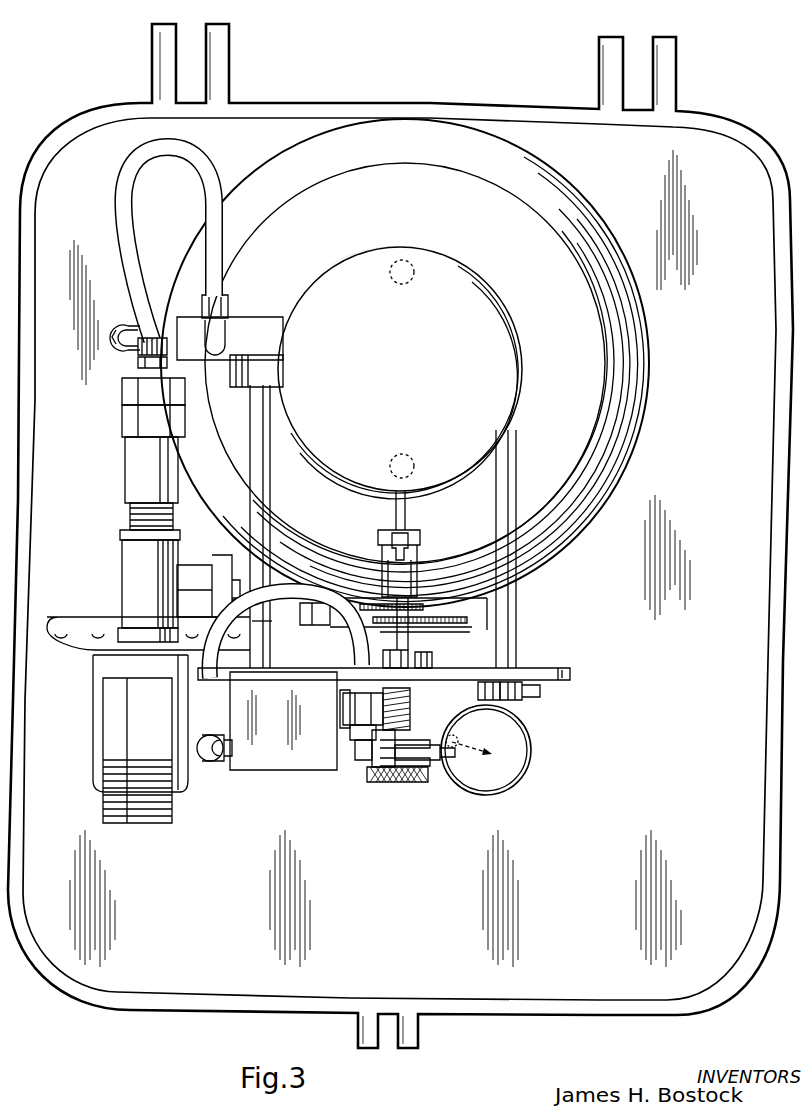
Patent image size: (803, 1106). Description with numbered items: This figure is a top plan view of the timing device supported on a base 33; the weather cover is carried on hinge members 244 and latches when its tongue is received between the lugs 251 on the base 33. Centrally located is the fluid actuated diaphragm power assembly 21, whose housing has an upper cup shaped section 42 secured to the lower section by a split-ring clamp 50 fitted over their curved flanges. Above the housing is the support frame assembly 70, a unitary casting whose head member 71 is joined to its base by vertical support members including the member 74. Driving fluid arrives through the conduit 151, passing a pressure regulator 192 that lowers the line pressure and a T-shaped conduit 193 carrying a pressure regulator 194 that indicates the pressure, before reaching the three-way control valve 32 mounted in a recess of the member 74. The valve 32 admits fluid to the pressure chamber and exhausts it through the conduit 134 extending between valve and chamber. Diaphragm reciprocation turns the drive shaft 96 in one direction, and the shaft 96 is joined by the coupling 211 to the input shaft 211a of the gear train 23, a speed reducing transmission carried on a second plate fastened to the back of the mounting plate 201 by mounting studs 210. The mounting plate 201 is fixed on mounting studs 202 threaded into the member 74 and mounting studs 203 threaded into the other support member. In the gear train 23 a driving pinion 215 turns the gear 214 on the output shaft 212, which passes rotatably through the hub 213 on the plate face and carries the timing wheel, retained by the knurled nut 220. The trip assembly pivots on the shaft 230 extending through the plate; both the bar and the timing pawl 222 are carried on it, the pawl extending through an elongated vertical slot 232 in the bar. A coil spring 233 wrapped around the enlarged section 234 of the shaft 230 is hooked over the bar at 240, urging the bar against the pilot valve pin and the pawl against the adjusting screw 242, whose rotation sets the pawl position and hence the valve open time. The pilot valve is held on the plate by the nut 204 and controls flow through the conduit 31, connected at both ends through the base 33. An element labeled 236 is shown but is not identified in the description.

The hinge members 244 is at (138, 46).
The base 33 is at (296, 102).
The fluid actuated diaphragm power assembly 21 is at (554, 170).
The upper cup shaped section 42 is at (534, 219).
The clamp 50 is at (618, 290).
The support frame assembly 70 is at (452, 242).
The head member 71 is at (362, 253).
The conduit 151 is at (118, 192).
The conduit 134 is at (131, 324).
The three-way control valve 32 is at (261, 312).
The vertical support member 74 is at (230, 384).
The mounting studs 202 is at (290, 497).
The mounting studs 203 is at (495, 508).
The drive shaft 96 is at (395, 510).
The coupling 211 is at (420, 557).
The input shaft 211a is at (378, 560).
The pressure regulator 192 is at (193, 575).
The T-shaped conduit 193 is at (130, 560).
The pressure regulator 194 is at (141, 810).
The driving pinion 215 is at (340, 580).
The gear train 23 is at (478, 620).
The gear 214 is at (470, 632).
The output shaft 212 is at (410, 640).
The mounting studs 210 is at (310, 632).
The shaft 230 is at (364, 661).
The mounting plate 201 is at (572, 675).
The nut 204 is at (289, 667).
The enlarged section 234 is at (345, 694).
The hub 213 is at (415, 702).
The elongated vertical slot 232 is at (364, 782).
The knurled nut 220 is at (429, 780).
The bolt 236 is at (440, 683).
The adjusting screw 242 is at (531, 741).
The coil spring 233 is at (471, 737).
The spring hook point on bar 240 is at (487, 754).
The timing pawl 222 is at (468, 771).
The conduit 31 is at (340, 787).
The lugs 251 is at (378, 1050).